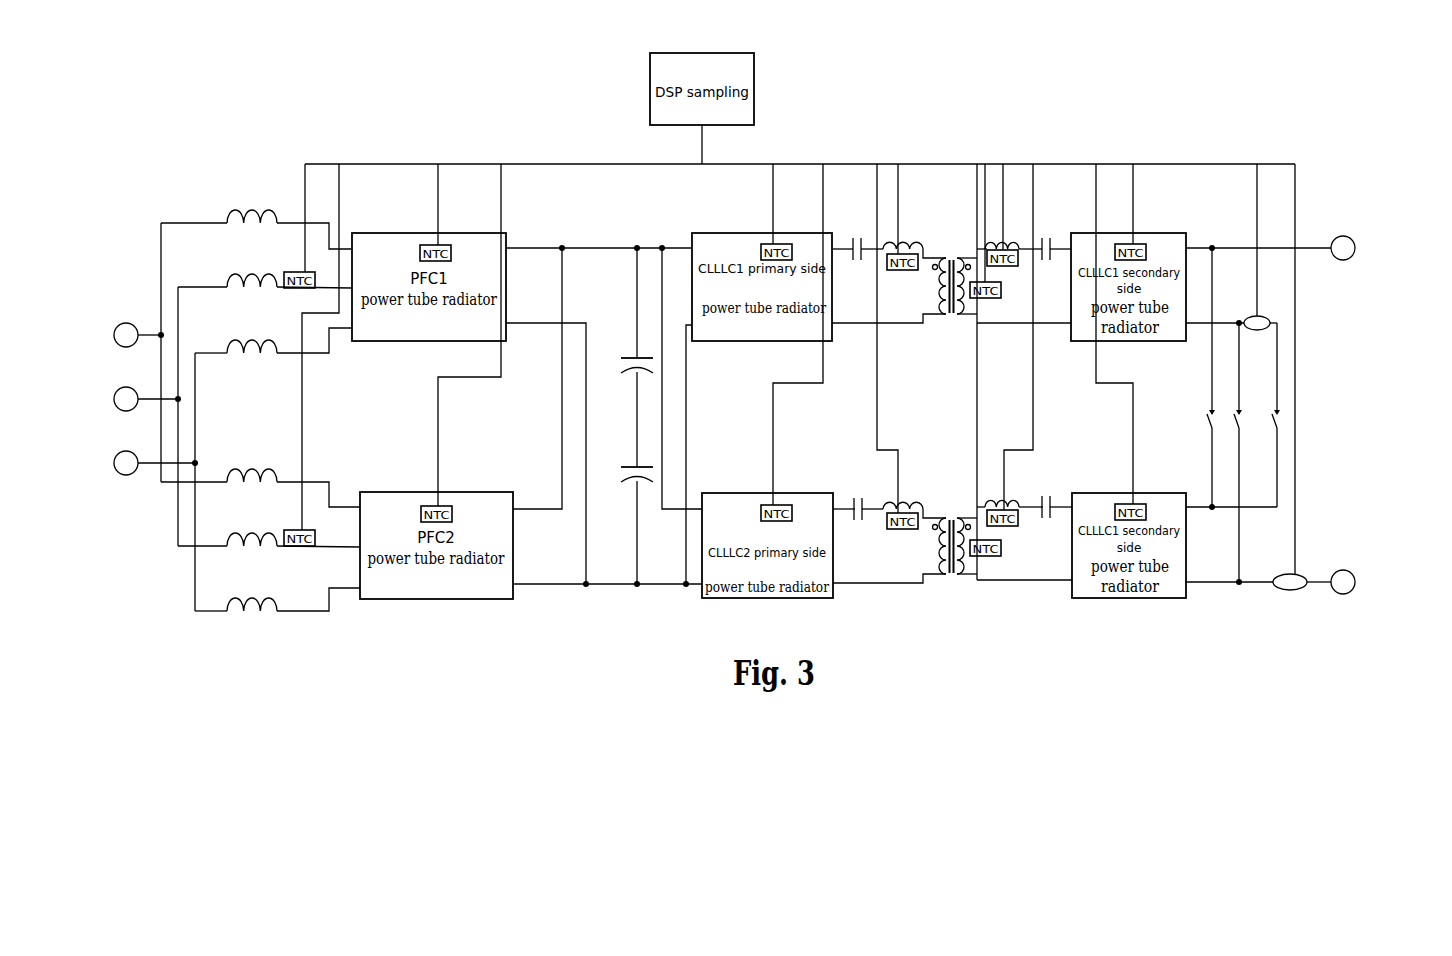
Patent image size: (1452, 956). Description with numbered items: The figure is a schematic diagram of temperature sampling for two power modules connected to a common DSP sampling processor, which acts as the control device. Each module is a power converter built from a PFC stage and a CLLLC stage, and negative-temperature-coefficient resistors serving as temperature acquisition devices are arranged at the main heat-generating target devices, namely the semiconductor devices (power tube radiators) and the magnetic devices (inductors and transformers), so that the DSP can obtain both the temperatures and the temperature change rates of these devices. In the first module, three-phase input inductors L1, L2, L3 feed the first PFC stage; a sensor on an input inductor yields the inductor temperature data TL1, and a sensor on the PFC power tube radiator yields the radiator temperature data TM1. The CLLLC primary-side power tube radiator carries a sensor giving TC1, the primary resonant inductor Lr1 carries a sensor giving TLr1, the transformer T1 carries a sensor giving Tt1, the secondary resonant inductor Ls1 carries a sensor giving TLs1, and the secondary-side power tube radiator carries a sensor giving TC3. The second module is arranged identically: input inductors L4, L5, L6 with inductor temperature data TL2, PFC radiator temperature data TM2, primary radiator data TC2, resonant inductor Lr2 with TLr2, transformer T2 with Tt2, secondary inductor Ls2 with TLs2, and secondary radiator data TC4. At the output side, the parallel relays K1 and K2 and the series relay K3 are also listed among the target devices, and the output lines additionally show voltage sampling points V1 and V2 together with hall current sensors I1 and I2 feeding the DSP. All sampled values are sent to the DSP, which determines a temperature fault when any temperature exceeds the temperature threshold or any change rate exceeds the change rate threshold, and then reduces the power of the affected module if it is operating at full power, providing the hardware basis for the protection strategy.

The inductor L1 is at (256, 225).
The inductor L2 is at (265, 276).
The inductor L3 is at (273, 340).
The inductor L4 is at (260, 483).
The inductor L5 is at (269, 535).
The inductor L6 is at (277, 599).
The inductor temperature data TL1 is at (309, 226).
The inductor temperature data TL2 is at (311, 355).
The power tube radiator temperature data TM1 is at (447, 212).
The power tube radiator temperature data TM2 is at (447, 514).
The primary side radiator temperature data TC1 is at (786, 212).
The primary side radiator temperature data TC2 is at (787, 513).
The secondary side radiator temperature data TC3 is at (1141, 212).
The secondary side radiator temperature data TC4 is at (1141, 512).
The resonant inductor Lr1 is at (914, 242).
The resonant inductor Lr2 is at (914, 501).
The secondary resonant inductor Ls1 is at (1009, 237).
The secondary resonant inductor Ls2 is at (1010, 495).
The resonant inductor temperature data TLr1 is at (902, 223).
The resonant inductor temperature data TLr2 is at (902, 527).
The secondary inductor temperature data TLs1 is at (1014, 215).
The secondary inductor temperature data TLs2 is at (1014, 518).
The transformer temperature data Tt1 is at (995, 231).
The transformer temperature data Tt2 is at (995, 549).
The transformer T1 is at (952, 278).
The transformer T2 is at (952, 539).
The parallel relay K1 is at (1202, 377).
The parallel relay K2 is at (1246, 452).
The series relay K3 is at (1284, 415).
The voltage sampling V1 is at (1272, 240).
The voltage sampling V2 is at (1283, 369).
The hall current sensor I1 is at (1231, 331).
The hall current sensor I2 is at (1258, 589).